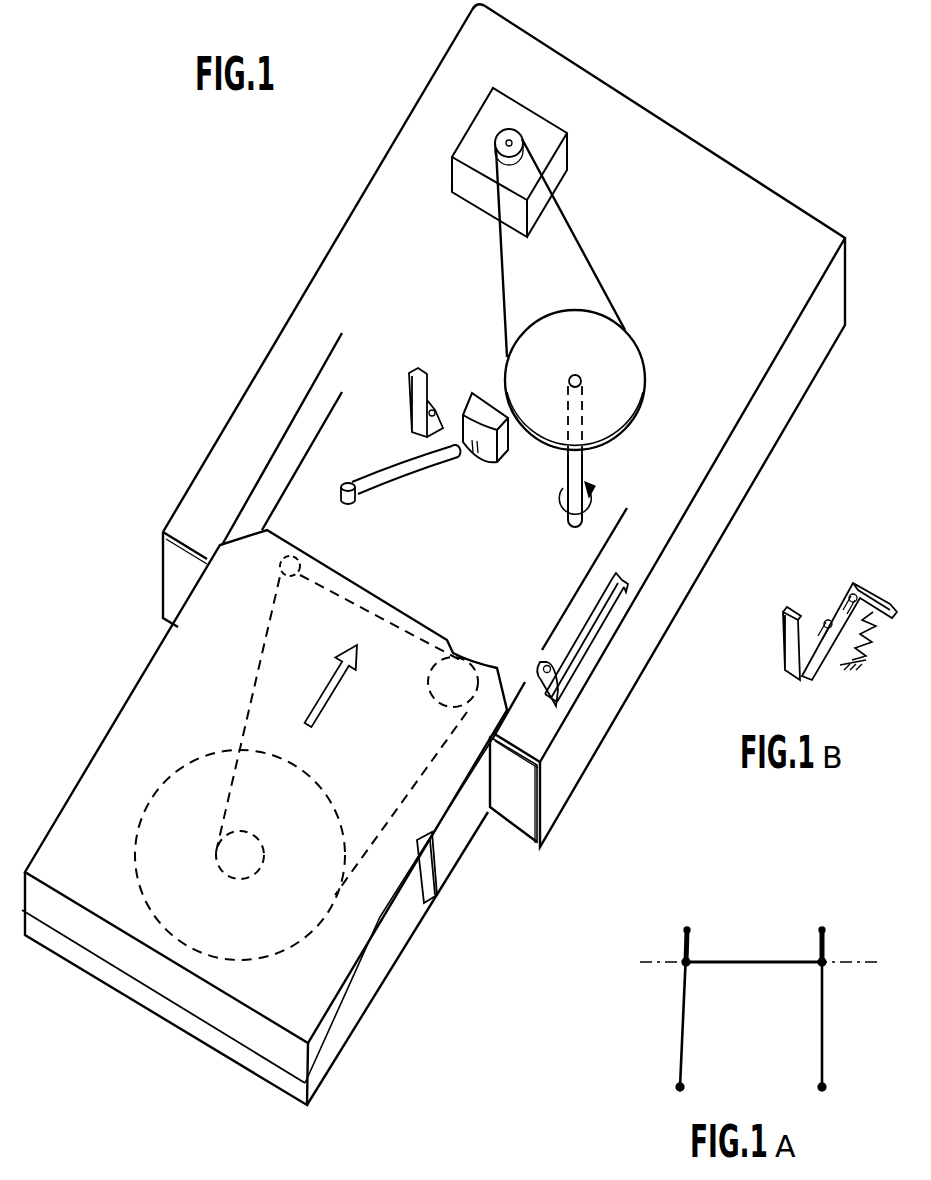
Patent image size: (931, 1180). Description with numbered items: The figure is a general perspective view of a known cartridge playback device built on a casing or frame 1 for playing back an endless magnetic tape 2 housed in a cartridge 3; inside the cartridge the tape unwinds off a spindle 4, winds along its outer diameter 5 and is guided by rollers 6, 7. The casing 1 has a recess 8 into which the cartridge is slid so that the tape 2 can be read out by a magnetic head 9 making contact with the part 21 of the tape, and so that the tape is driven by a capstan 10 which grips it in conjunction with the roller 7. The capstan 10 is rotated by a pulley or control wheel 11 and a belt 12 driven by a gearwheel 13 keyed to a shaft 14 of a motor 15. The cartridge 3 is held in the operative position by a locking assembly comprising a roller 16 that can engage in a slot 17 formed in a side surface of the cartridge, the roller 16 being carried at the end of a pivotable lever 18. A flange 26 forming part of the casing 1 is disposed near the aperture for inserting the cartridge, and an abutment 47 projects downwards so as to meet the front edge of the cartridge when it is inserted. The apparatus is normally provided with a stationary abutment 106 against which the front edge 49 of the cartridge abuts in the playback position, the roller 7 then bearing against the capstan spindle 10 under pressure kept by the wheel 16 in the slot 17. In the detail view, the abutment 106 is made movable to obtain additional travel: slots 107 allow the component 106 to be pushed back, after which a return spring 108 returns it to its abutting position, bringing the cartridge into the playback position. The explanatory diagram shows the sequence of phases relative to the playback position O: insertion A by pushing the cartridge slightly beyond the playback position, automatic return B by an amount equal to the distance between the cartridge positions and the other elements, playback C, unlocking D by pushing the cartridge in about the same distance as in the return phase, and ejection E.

In FIG. 1, the casing or frame 1 is at (326, 246).
In FIG. 1, the endless magnetic tape 2 is at (252, 678).
In FIG. 1, the cartridge 3 is at (135, 712).
In FIG. 1, the spindle 4 is at (245, 866).
In FIG. 1, the outer diameter 5 is at (326, 800).
In FIG. 1, the roller 6 is at (297, 576).
In FIG. 1, the roller 7 is at (445, 686).
In FIG. 1, the recess 8 is at (282, 462).
In FIG. 1, the magnetic head 9 is at (487, 408).
In FIG. 1, the capstan 10 is at (572, 475).
In FIG. 1, the pulley or control wheel 11 is at (632, 387).
In FIG. 1, the belt 12 is at (588, 248).
In FIG. 1, the gearwheel 13 is at (507, 140).
In FIG. 1, the shaft 14 is at (510, 142).
In FIG. 1, the motor 15 is at (560, 162).
In FIG. 1, the roller 16 is at (545, 670).
In FIG. 1, the slot 17 is at (430, 893).
In FIG. 1, the lever 18 is at (600, 613).
In FIG. 1, the screw 21 is at (346, 590).
In FIG. 1, the flange 26 is at (530, 820).
In FIG. 1, the abutment 47 is at (348, 490).
In FIG. 1, the front edge 49 is at (388, 600).
In FIG. 1, the stationary abutment 106 is at (412, 398).
In FIG. 1B, the stationary abutment 106 is at (787, 637).
In FIG. 1B, the slots 107 is at (838, 612).
In FIG. 1B, the return spring 108 is at (870, 640).
In FIG. 1A, the playback position O is at (625, 962).
In FIG. 1A, the insertion phase A is at (683, 1016).
In FIG. 1A, the automatic return phase B is at (692, 940).
In FIG. 1A, the playback phase C is at (748, 960).
In FIG. 1A, the unlocking phase D is at (815, 940).
In FIG. 1A, the ejection phase E is at (824, 1016).